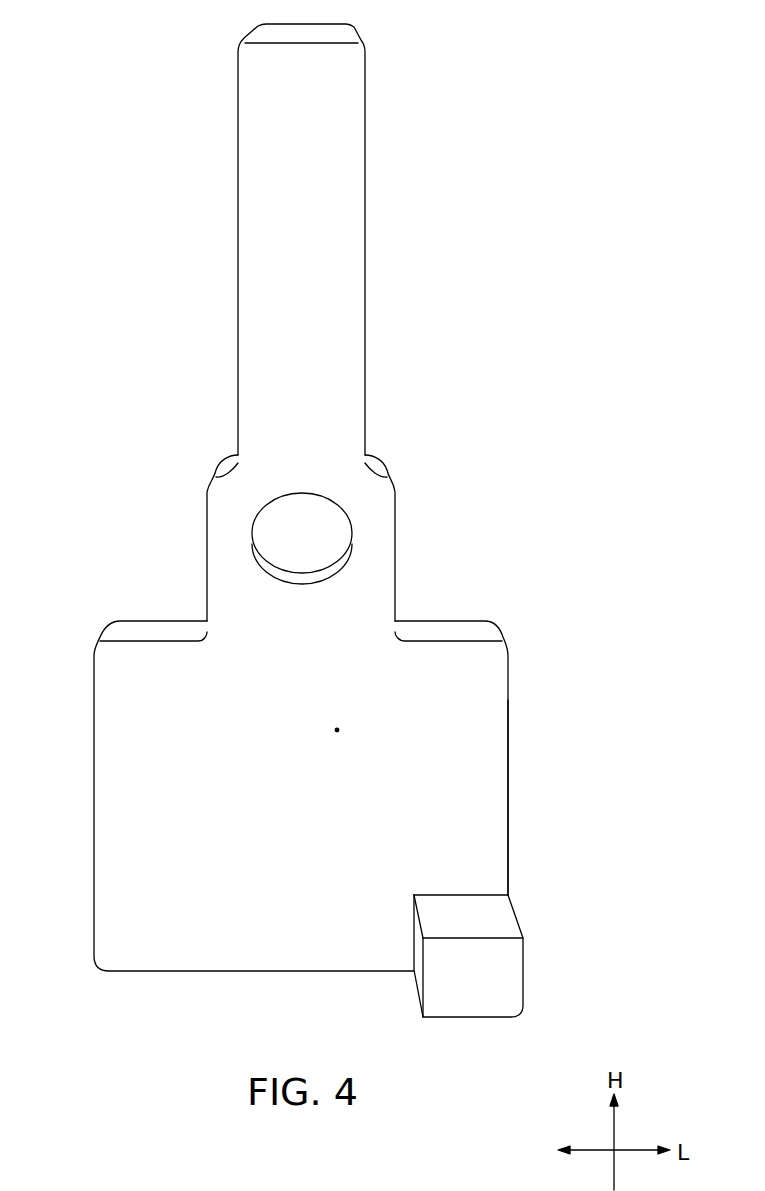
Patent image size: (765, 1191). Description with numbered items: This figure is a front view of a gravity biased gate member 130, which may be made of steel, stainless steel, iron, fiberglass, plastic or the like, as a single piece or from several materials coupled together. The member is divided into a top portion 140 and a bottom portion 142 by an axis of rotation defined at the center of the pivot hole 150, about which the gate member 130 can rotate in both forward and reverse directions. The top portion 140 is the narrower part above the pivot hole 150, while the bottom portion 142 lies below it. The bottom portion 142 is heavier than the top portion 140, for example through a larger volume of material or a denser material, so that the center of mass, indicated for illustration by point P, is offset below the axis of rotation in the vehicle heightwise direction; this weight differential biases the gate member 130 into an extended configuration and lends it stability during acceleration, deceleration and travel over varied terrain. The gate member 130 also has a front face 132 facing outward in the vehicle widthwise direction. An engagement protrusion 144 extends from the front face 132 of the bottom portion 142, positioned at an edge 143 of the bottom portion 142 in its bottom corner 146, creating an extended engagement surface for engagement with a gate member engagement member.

The gravity biased gate member 130 is at (178, 70).
The front face 132 is at (275, 190).
The top portion 140 is at (248, 276).
The bottom portion 142 is at (118, 930).
The edge 143 is at (508, 880).
The engagement protrusion 144 is at (466, 1003).
The bottom corner 146 is at (463, 895).
The pivot hole 150 is at (316, 547).
The point P is at (337, 730).